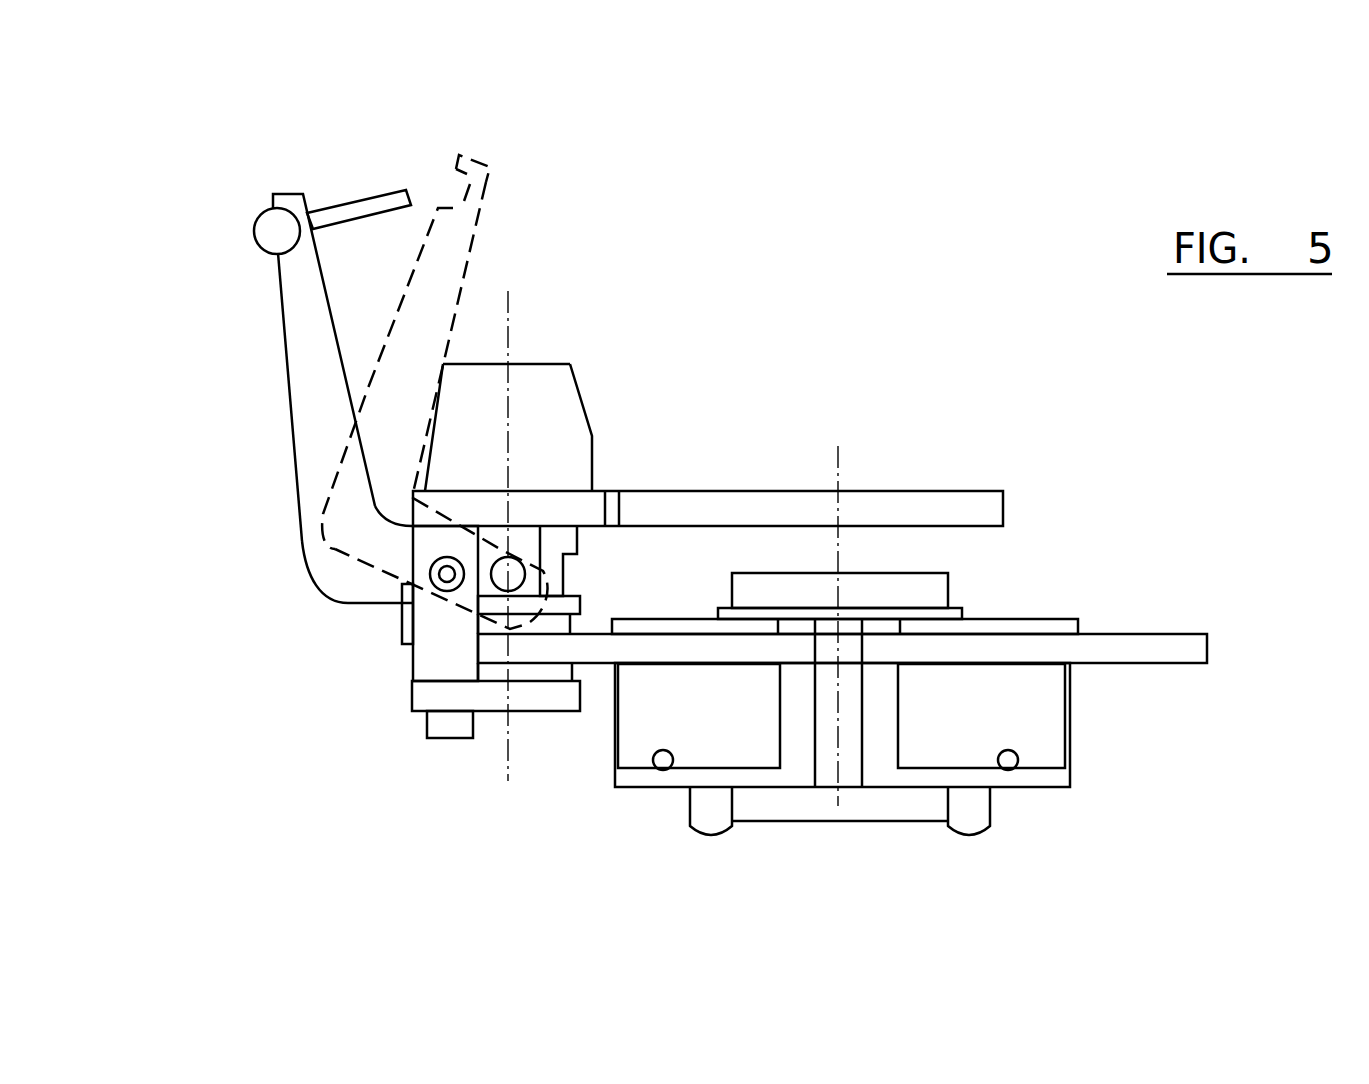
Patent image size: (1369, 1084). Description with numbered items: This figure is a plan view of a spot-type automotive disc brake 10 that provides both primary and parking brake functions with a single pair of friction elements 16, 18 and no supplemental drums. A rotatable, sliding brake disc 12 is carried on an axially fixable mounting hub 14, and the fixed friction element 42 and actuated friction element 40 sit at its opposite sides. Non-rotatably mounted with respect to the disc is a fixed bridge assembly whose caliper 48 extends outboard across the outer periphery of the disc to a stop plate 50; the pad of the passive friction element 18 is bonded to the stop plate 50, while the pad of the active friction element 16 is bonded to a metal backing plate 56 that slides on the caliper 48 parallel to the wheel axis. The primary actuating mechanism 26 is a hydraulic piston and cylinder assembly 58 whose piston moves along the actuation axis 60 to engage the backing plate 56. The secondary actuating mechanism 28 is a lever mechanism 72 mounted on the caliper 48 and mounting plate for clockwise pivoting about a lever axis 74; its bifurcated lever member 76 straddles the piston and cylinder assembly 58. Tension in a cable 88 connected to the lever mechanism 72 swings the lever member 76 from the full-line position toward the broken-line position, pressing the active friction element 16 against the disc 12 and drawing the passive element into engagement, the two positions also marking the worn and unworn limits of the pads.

The disc brake 10 is at (1052, 487).
The brake disc 12 is at (1183, 657).
The mounting hub 14 is at (1070, 790).
The friction element 16 is at (590, 600).
The friction element 18 is at (582, 670).
The primary actuating mechanism 26 is at (592, 383).
The secondary actuating mechanism 28 is at (290, 468).
The actuated friction element 40 is at (552, 623).
The fixed friction element 42 is at (522, 667).
The caliper 48 is at (412, 665).
The stop plate 50 is at (540, 700).
The backing plate 56 is at (567, 544).
The hydraulic piston and cylinder assembly 58 is at (535, 363).
The actuation axis 60 is at (508, 425).
The lever mechanism 72 is at (303, 568).
The lever axis 74 is at (430, 573).
The lever member 76 is at (293, 300).
The cable 88 is at (362, 208).